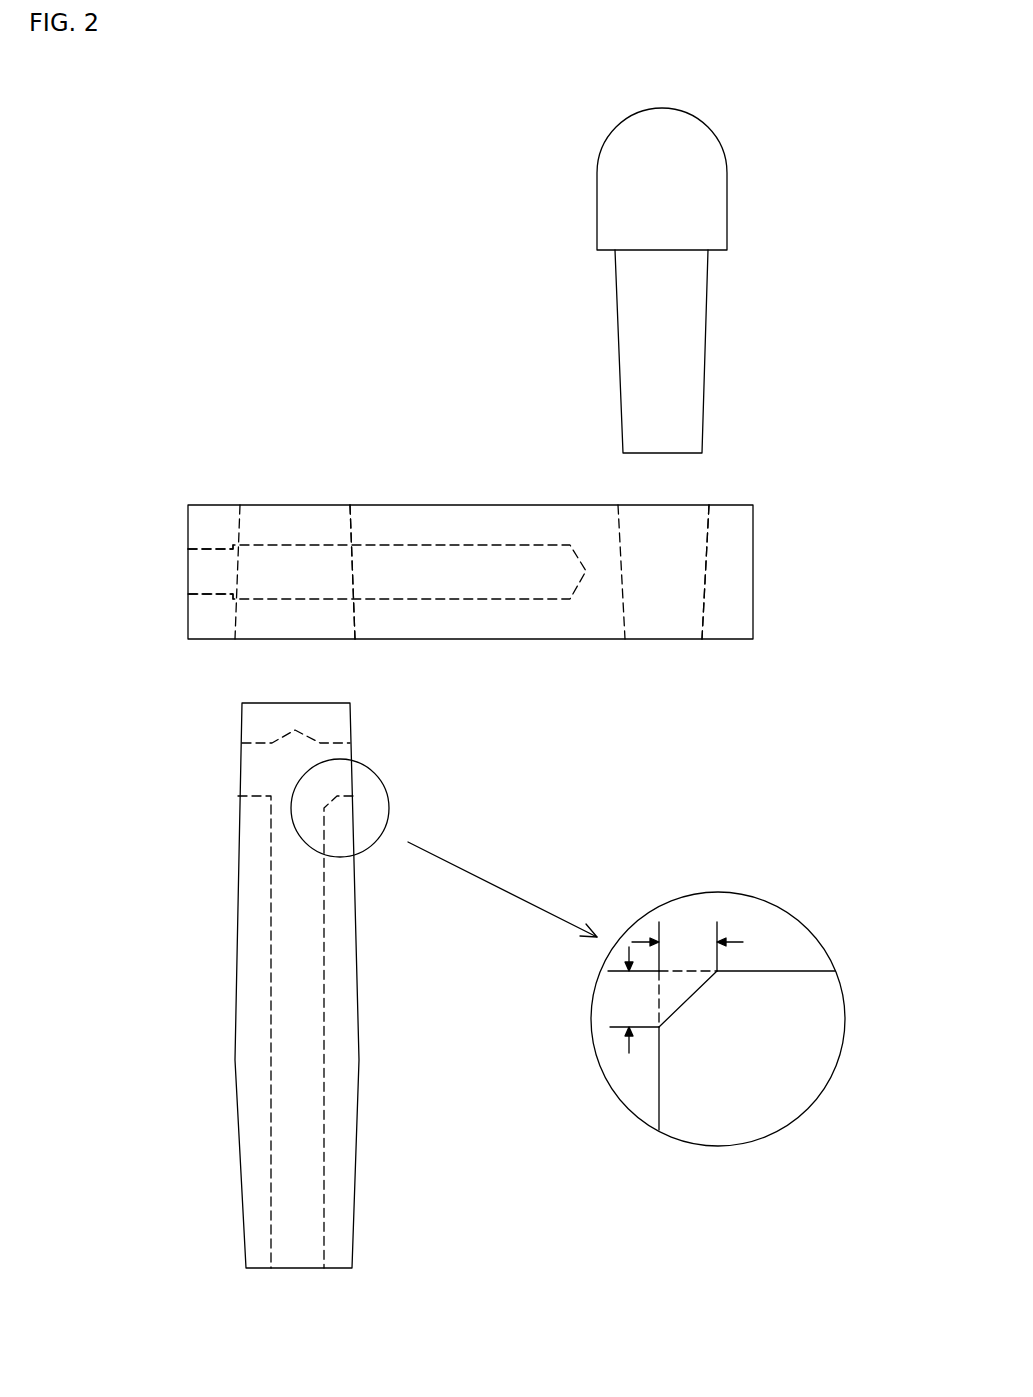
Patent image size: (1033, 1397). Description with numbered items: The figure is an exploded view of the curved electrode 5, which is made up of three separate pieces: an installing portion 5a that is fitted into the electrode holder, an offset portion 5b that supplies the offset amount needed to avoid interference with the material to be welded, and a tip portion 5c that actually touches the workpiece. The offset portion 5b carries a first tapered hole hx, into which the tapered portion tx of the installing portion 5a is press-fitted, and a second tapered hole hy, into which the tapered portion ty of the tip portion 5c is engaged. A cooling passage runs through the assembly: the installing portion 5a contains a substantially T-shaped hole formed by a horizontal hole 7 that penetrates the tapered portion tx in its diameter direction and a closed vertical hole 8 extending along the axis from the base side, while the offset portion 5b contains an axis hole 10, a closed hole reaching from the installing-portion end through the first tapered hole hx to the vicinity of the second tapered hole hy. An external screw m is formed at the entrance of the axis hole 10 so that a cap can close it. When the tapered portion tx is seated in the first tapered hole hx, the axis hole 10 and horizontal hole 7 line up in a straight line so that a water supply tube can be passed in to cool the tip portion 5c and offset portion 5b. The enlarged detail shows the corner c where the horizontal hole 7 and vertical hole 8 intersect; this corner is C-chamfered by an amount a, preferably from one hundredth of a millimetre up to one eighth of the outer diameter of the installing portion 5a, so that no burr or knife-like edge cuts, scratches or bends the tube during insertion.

The curved electrode 5 is at (333, 458).
The installing portion 5a is at (278, 985).
The offset portion 5b is at (424, 583).
The tip portion 5c is at (697, 280).
The horizontal hole 7 is at (254, 797).
The vertical hole 8 is at (324, 1050).
The axis hole 10 is at (512, 590).
The external screw m is at (208, 593).
The tapered portion of the installing portion tx is at (242, 715).
The tapered portion of the tip portion ty is at (703, 403).
The first tapered hole hx is at (356, 622).
The second tapered hole hy is at (707, 571).
The amount of C-chamfering a is at (682, 991).
The corner c is at (687, 1002).